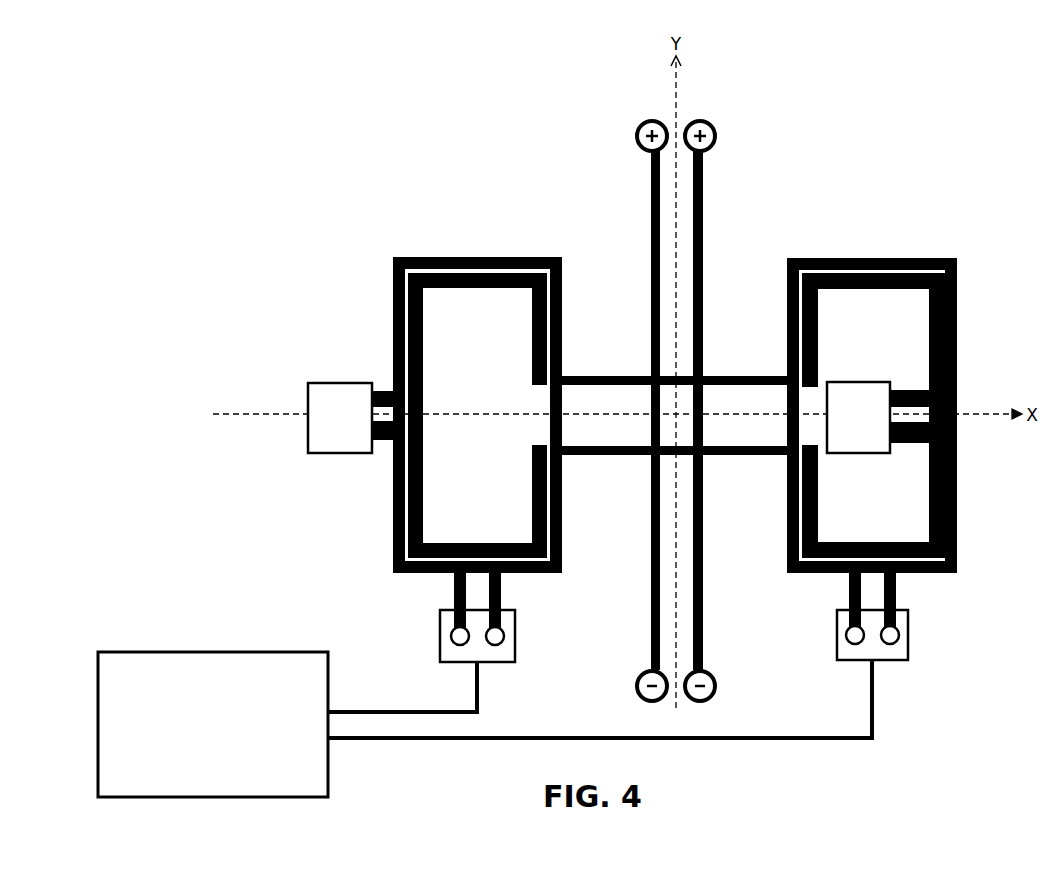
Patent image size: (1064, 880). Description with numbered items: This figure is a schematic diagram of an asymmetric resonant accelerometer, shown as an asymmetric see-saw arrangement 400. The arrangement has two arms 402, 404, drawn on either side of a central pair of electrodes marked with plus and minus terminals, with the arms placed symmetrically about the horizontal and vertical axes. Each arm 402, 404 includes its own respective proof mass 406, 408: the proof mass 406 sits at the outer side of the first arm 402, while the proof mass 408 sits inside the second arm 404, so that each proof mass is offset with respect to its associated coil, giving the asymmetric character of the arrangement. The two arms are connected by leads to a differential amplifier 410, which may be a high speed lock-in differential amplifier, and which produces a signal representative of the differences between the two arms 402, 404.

The asymmetric see-saw arrangement 400 is at (287, 159).
The arm 402 is at (483, 258).
The arm 404 is at (887, 258).
The proof mass 406 is at (345, 382).
The proof mass 408 is at (845, 382).
The differential amplifier 410 is at (485, 724).